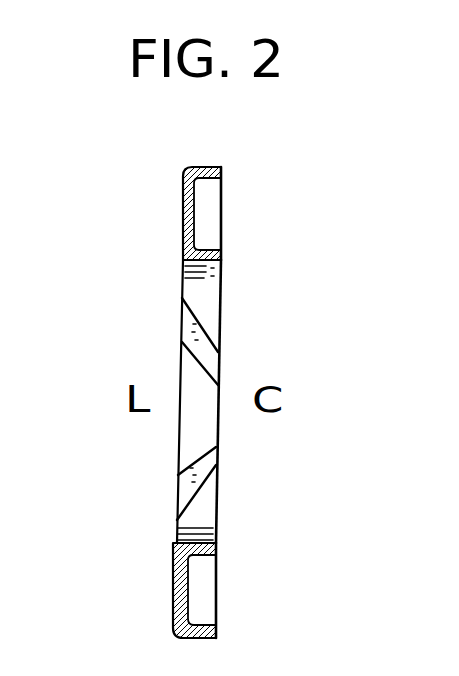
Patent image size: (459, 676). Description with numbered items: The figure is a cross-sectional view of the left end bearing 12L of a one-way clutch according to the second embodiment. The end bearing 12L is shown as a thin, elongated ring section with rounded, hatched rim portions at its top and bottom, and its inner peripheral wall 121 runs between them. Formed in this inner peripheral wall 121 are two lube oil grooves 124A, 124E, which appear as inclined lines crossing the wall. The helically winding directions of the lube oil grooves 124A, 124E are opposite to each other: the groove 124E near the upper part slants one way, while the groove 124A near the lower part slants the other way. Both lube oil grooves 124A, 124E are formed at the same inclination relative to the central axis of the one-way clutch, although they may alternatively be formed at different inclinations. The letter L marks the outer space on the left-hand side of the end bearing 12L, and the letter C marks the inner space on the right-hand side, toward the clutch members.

The end bearing 12L is at (183, 217).
The inner peripheral wall 121 is at (204, 270).
The lube oil groove 124E is at (208, 346).
The lube oil groove 124A is at (187, 487).